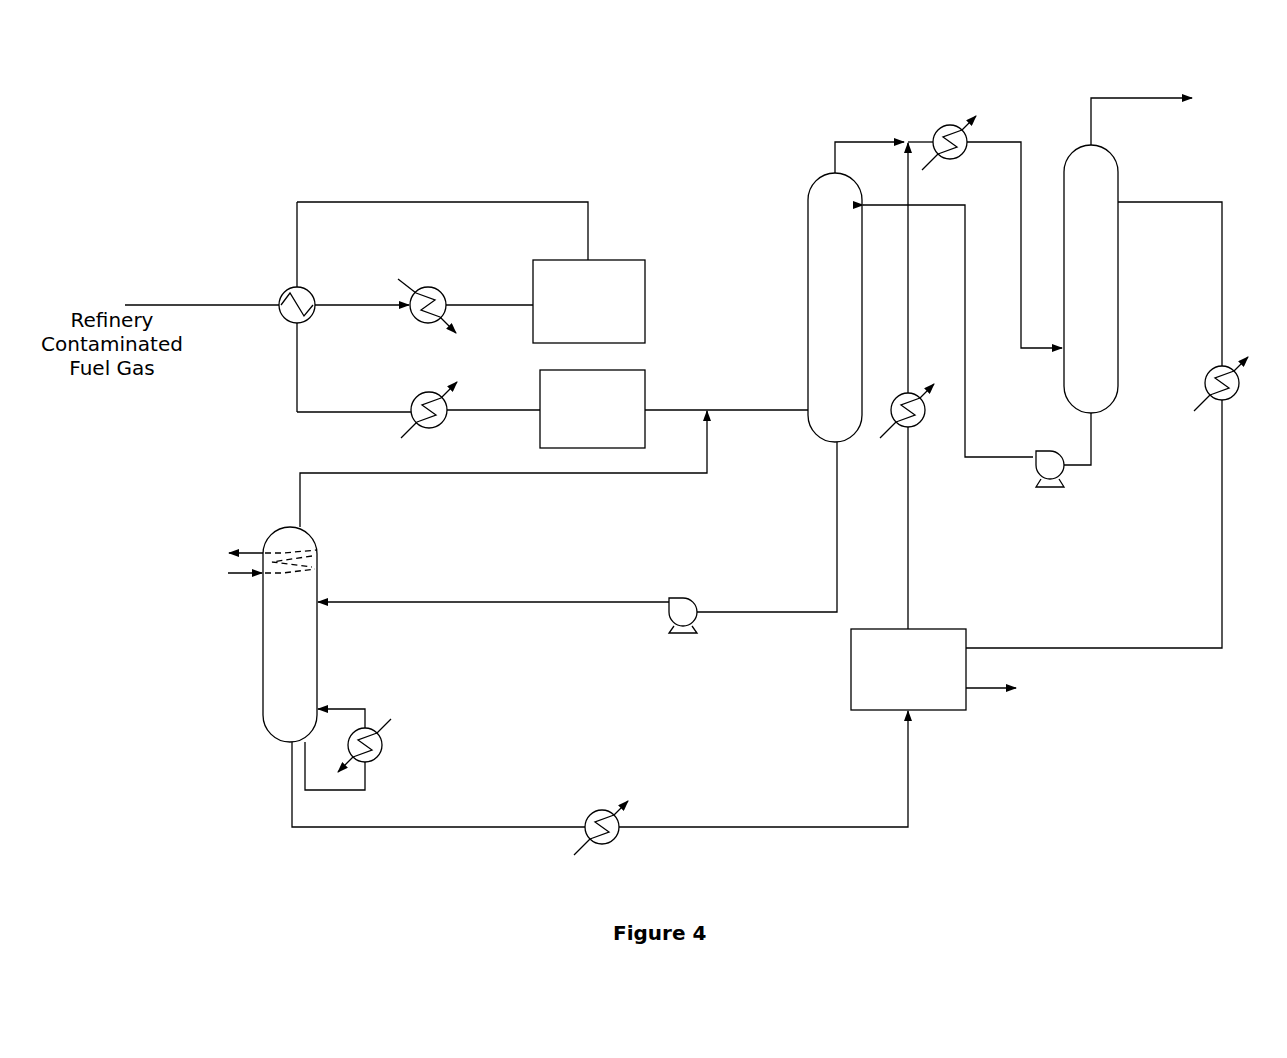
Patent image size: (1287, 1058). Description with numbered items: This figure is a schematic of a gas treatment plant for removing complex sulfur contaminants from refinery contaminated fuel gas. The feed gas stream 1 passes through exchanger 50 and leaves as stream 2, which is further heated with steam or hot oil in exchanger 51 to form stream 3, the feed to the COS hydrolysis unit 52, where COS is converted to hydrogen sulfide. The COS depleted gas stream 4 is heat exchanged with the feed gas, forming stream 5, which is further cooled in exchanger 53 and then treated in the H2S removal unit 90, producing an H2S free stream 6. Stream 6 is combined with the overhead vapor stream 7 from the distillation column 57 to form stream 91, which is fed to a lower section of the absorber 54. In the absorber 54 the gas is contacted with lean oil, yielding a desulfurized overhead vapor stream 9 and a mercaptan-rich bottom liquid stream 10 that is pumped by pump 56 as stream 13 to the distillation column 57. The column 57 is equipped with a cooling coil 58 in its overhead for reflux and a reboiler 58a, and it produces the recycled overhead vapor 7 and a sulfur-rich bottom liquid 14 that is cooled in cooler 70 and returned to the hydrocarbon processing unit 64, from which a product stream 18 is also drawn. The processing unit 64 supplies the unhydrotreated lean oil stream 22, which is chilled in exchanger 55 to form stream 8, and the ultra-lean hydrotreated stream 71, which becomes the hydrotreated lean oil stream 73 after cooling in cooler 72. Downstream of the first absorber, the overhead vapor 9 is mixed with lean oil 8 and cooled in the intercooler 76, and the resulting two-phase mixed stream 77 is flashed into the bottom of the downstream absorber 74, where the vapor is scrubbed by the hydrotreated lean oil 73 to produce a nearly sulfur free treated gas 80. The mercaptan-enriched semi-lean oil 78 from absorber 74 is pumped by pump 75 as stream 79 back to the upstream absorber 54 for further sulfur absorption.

The refinery contaminated fuel gas stream 1 is at (178, 305).
The stream 2 is at (358, 305).
The stream 3 is at (478, 305).
The COS depleted gas stream 4 is at (522, 202).
The stream 5 is at (328, 412).
The H2S free stream 6 is at (676, 410).
The overhead vapor stream 7 is at (710, 455).
The lean oil stream 8 is at (908, 305).
The overhead vapor stream 9 is at (858, 140).
The bottom liquid stream 10 is at (768, 612).
The stream 13 is at (618, 602).
The bottom liquid 14 is at (458, 827).
The refinery product stream 18 is at (990, 695).
The lean oil stream 22 is at (908, 493).
The cross heat exchanger 50 is at (309, 293).
The exchanger 51 is at (440, 290).
The COS hydrolysis unit 52 is at (652, 310).
The exchanger 53 is at (425, 392).
The absorber 54 is at (806, 195).
The exchanger 55 is at (918, 425).
The pump 56 is at (690, 598).
The distillation column 57 is at (320, 540).
The cooling coil 58 is at (273, 548).
The reboiler 58a is at (385, 752).
The hydrocarbon processing unit 64 is at (966, 632).
The cooler 70 is at (632, 795).
The ultra-lean hydrotreated stream 71 is at (1190, 645).
The cooler 72 is at (1220, 400).
The hydrotreated lean oil stream 73 is at (1200, 202).
The absorber 74 is at (1117, 175).
The pump 75 is at (1055, 490).
The intercooler 76 is at (952, 125).
The two-phase mixed stream 77 is at (1021, 142).
The semi-lean oil 78 is at (1092, 467).
The stream 79 is at (967, 385).
The treated gas 80 is at (1133, 97).
The H2S removal unit 90 is at (646, 385).
The stream 91 is at (745, 410).